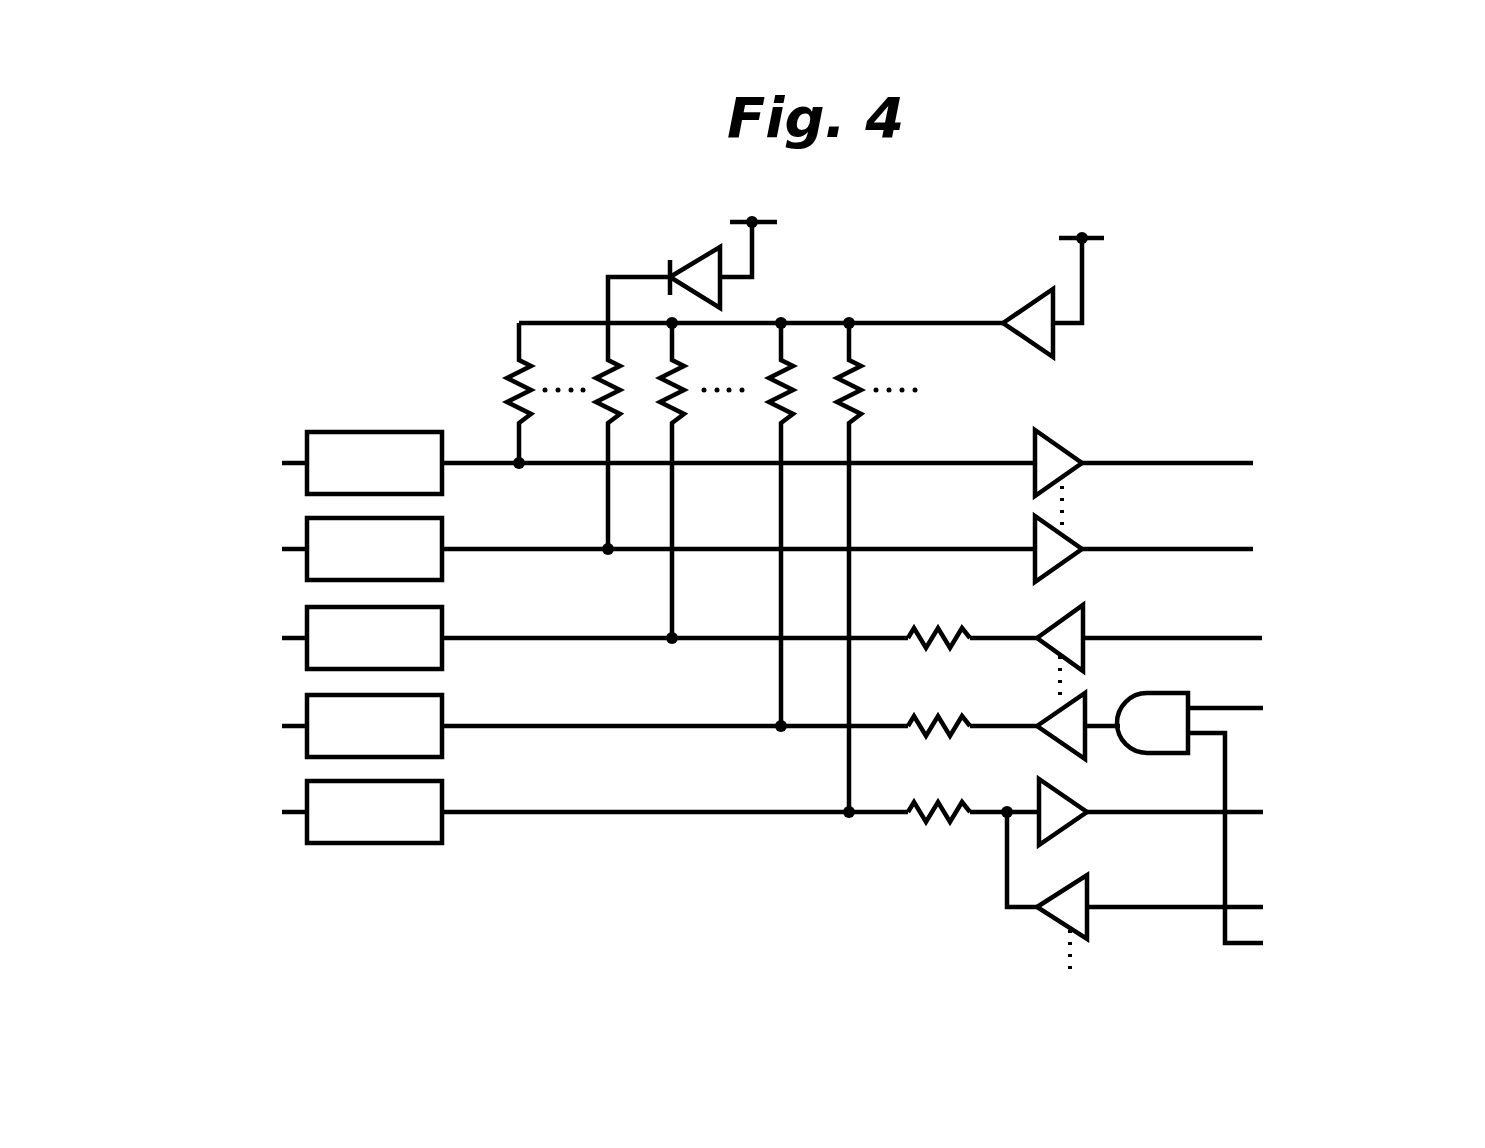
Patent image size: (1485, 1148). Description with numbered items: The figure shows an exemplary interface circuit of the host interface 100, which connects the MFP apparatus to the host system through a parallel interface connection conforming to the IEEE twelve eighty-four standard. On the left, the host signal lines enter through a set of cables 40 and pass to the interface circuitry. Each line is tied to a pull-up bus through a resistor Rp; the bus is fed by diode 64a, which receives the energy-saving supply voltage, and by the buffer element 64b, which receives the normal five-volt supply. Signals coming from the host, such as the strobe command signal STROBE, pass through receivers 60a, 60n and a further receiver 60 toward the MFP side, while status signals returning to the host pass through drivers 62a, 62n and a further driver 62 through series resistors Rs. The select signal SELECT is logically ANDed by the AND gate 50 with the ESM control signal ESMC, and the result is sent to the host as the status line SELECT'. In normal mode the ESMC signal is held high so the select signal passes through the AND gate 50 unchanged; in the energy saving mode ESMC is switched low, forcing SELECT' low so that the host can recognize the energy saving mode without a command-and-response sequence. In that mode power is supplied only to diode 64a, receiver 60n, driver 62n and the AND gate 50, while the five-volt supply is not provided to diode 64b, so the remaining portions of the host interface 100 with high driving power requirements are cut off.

The host interface 100 is at (1222, 327).
The cable 40 is at (387, 432).
The diode 64a is at (708, 260).
The diode 64b is at (1033, 301).
The output buffer 60a is at (1050, 438).
The receiver 60n is at (1072, 540).
The input buffer 62a is at (1085, 628).
The driver 62n is at (1087, 708).
The AND gate 50 is at (1196, 693).
The output buffer 60 is at (1084, 801).
The input buffer 62 is at (1089, 894).